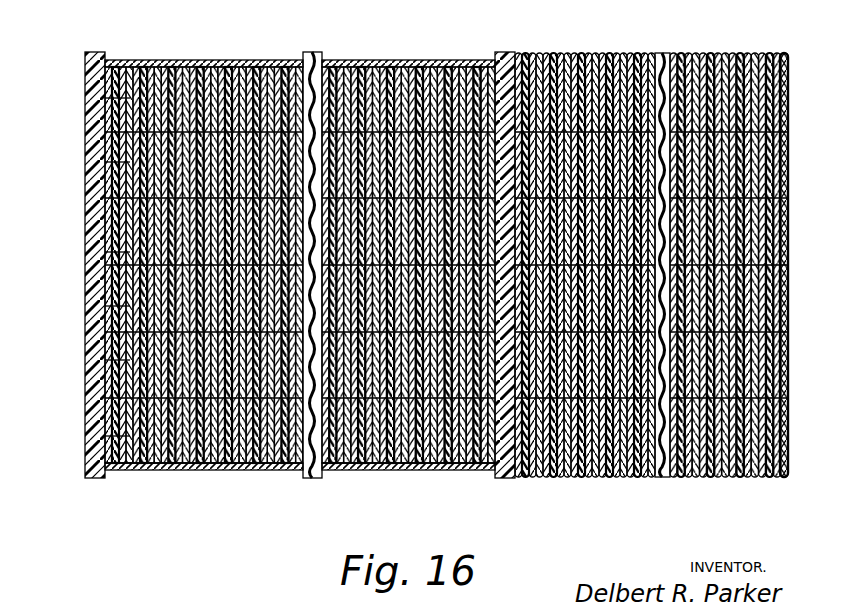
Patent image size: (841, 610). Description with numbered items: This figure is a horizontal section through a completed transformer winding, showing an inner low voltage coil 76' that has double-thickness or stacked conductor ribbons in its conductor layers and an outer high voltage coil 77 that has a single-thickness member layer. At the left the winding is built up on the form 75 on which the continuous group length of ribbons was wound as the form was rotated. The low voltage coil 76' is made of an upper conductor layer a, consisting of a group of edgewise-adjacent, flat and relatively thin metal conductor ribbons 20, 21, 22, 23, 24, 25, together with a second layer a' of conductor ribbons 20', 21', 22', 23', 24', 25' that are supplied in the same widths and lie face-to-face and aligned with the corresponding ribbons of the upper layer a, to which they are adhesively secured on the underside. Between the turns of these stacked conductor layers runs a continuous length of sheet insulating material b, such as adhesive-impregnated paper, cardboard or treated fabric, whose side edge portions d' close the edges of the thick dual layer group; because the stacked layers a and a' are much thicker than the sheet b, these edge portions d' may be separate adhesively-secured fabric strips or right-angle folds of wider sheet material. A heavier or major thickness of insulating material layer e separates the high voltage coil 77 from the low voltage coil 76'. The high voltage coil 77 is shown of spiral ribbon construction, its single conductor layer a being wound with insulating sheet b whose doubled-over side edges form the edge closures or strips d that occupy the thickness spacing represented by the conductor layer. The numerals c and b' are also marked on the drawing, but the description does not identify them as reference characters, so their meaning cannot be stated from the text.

The form 75 is at (92, 214).
The low voltage coil 76' is at (341, 280).
The high voltage coil 77 is at (666, 278).
The insulating material layer e is at (512, 48).
The corrugated spacer strip c is at (312, 54).
The second layer of conductors a' is at (120, 244).
The conductor layer a is at (344, 251).
The side edge portions d' is at (168, 244).
The side or edge closures or strip d is at (568, 251).
The lamination strip b' is at (192, 244).
The sheet insulating material b is at (674, 250).
The conductor ribbon 25 is at (427, 117).
The conductor ribbon 25' is at (80, 102).
The conductor ribbon 24 is at (431, 178).
The conductor ribbon 24' is at (84, 160).
The conductor ribbon 23 is at (431, 267).
The conductor ribbon 23' is at (85, 253).
The conductor ribbon 22 is at (431, 316).
The conductor ribbon 22' is at (84, 305).
The conductor ribbon 21 is at (432, 379).
The conductor ribbon 21' is at (85, 360).
The conductor ribbon 20 is at (432, 444).
The conductor ribbon 20' is at (85, 435).